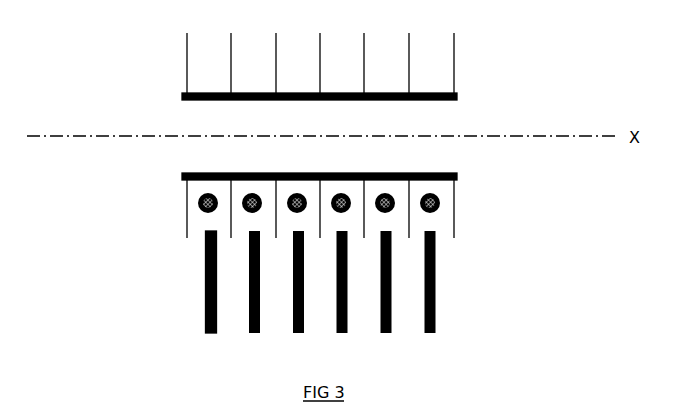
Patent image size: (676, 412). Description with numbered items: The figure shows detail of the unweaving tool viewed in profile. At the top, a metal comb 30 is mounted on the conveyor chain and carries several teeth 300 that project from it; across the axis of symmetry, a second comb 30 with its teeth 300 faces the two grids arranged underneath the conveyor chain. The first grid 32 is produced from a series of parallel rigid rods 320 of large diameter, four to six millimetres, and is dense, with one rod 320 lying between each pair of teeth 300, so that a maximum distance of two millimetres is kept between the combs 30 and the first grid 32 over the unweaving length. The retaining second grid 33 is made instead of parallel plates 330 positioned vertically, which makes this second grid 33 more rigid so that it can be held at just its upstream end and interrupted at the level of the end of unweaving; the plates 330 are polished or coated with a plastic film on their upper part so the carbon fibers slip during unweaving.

The metal comb 30 is at (321, 190).
The teeth 300 is at (454, 64).
The first grid 32 is at (350, 210).
The rigid rods 320 is at (437, 203).
The second grid 33 is at (317, 289).
The parallel plates 330 is at (206, 308).